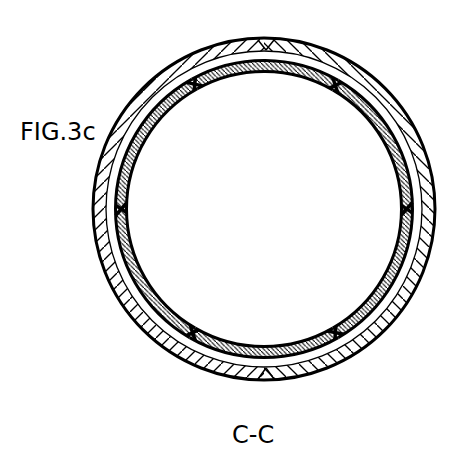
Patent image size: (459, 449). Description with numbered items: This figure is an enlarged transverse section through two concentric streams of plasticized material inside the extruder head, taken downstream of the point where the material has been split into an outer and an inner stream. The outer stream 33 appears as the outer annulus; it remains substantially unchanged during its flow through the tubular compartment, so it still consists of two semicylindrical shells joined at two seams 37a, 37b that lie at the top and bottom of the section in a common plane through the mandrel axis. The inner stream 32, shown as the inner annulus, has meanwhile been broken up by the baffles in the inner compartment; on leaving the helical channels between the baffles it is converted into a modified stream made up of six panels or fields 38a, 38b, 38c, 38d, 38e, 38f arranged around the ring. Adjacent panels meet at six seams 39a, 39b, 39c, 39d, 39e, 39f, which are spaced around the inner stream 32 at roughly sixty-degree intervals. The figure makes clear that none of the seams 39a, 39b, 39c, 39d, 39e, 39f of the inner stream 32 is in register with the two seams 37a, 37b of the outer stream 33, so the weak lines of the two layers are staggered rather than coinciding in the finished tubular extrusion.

The outer stream 33 is at (141, 80).
The inner stream 32 is at (176, 130).
The seam 37a is at (266, 50).
The seam 37b is at (268, 375).
The panel or field 38a is at (150, 286).
The panel or field 38b is at (175, 101).
The panel or field 38c is at (278, 75).
The panel or field 38d is at (393, 156).
The panel or field 38e is at (395, 285).
The panel or field 38f is at (268, 352).
The seam 39a is at (124, 207).
The seam 39b is at (207, 80).
The seam 39c is at (331, 88).
The seam 39d is at (402, 222).
The seam 39e is at (321, 337).
The seam 39f is at (205, 337).